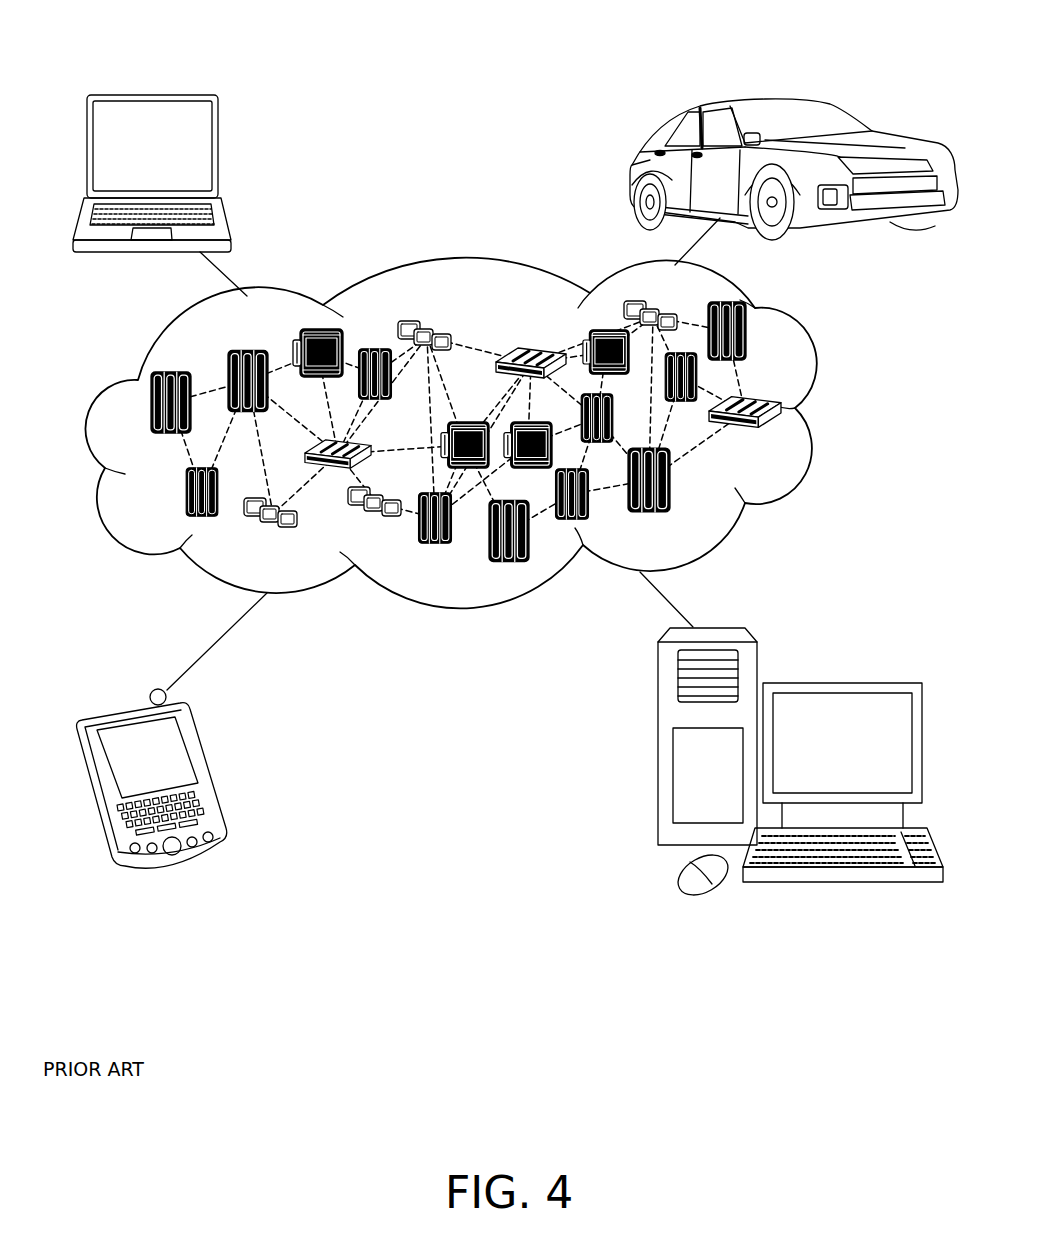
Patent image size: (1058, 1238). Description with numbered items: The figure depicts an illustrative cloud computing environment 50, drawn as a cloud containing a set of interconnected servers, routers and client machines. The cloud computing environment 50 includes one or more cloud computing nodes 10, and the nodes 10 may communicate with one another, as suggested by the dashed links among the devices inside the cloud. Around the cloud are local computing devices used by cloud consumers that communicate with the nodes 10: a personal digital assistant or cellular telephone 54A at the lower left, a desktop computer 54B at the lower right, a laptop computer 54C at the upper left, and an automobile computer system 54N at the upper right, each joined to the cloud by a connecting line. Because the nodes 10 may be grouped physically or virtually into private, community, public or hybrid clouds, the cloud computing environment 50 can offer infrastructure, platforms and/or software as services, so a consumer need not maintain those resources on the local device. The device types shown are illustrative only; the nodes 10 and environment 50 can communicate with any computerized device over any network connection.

The cloud computing node 10 is at (792, 442).
The cloud computing environment 50 is at (491, 433).
The personal digital assistant or cellular telephone 54A is at (208, 775).
The desktop computer 54B is at (838, 682).
The laptop computer 54C is at (218, 152).
The automobile computer system 54N is at (632, 170).